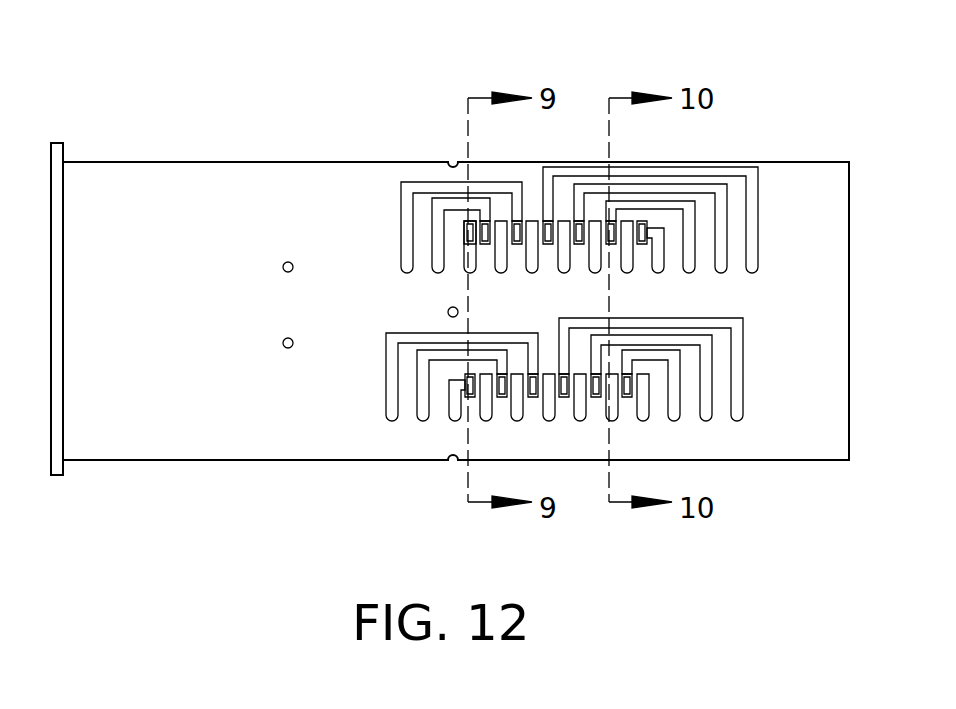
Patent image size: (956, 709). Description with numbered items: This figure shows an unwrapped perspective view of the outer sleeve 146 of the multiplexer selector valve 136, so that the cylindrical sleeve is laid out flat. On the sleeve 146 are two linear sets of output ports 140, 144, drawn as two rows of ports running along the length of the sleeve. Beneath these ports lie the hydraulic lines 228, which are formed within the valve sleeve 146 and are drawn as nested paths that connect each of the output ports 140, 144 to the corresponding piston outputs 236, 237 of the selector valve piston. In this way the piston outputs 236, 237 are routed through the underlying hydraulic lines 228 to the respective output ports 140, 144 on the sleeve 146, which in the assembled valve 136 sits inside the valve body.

The multiplexer selector valve 136 is at (450, 251).
The outer sleeve 146 is at (207, 183).
The output ports 140 is at (499, 254).
The output ports 144 is at (487, 390).
The piston output 236 is at (466, 236).
The piston output 237 is at (466, 384).
The hydraulic lines 228 is at (758, 212).